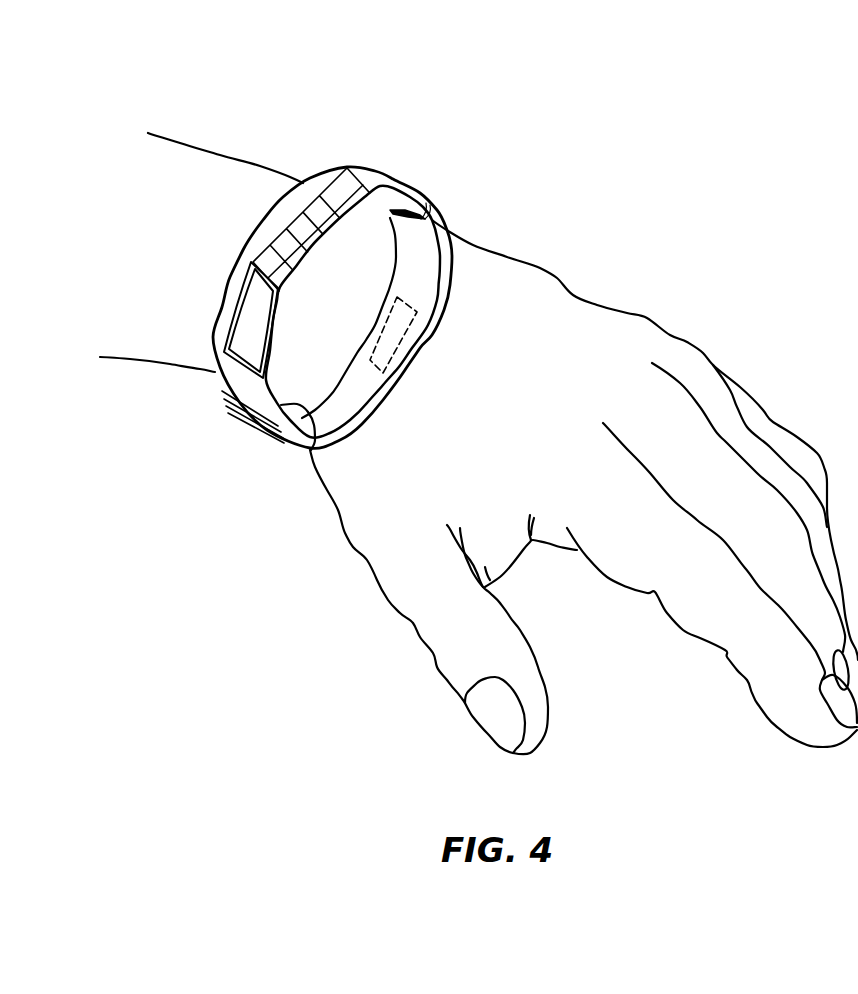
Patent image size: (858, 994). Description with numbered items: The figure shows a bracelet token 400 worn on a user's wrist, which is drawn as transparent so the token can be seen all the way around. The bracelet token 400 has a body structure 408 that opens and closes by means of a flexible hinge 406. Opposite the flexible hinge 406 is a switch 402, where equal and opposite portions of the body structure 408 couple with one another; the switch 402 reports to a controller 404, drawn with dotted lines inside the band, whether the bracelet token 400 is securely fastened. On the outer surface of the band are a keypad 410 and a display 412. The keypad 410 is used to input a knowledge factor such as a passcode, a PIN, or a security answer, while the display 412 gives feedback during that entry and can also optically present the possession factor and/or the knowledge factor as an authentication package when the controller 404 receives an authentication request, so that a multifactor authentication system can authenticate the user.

The bracelet token 400 is at (362, 170).
The switch 402 is at (430, 204).
The controller 404 is at (413, 310).
The flexible hinge 406 is at (257, 427).
The body structure 408 is at (302, 442).
The keypad 410 is at (300, 207).
The display 412 is at (250, 310).